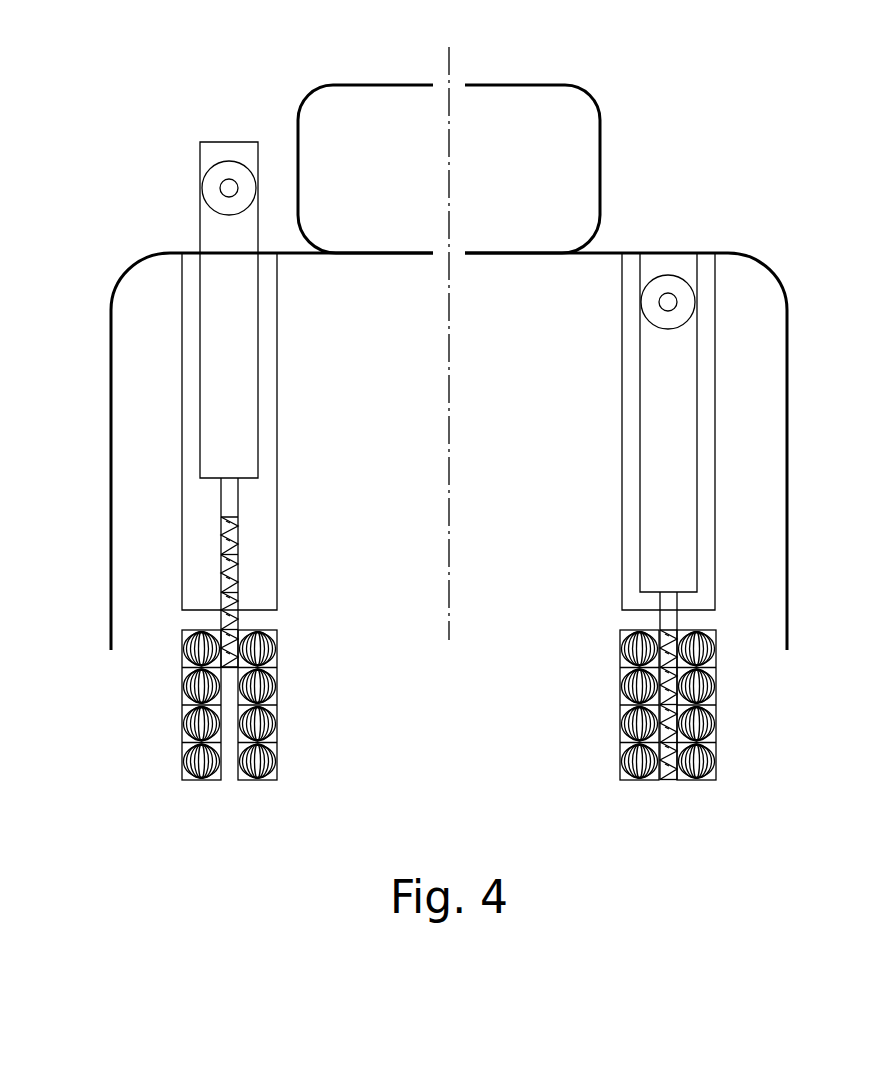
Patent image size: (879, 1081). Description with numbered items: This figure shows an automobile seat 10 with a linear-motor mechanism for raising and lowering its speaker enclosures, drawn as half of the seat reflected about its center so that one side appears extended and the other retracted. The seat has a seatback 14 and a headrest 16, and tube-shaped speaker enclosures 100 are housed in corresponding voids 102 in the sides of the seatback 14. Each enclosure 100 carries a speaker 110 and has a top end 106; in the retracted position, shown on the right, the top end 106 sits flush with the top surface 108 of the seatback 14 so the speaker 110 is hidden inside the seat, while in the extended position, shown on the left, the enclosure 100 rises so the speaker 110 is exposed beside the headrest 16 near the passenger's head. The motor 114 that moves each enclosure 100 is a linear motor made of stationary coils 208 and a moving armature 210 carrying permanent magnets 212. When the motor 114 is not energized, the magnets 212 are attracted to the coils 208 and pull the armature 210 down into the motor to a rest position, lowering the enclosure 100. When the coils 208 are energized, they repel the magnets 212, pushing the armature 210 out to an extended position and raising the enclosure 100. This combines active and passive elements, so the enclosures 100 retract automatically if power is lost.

The automobile seat 10 is at (48, 248).
The seatback 14 is at (350, 306).
The headrest 16 is at (375, 85).
The tube-shaped speaker enclosure 100 is at (200, 413).
The void 102 is at (182, 447).
The top end of enclosure 106 is at (217, 142).
The top surface of seatback 108 is at (170, 253).
The speaker 110 is at (232, 161).
The motor 114 is at (278, 760).
The stationary coils 208 is at (195, 652).
The moving armature 210 is at (236, 497).
The permanent magnets 212 is at (238, 608).